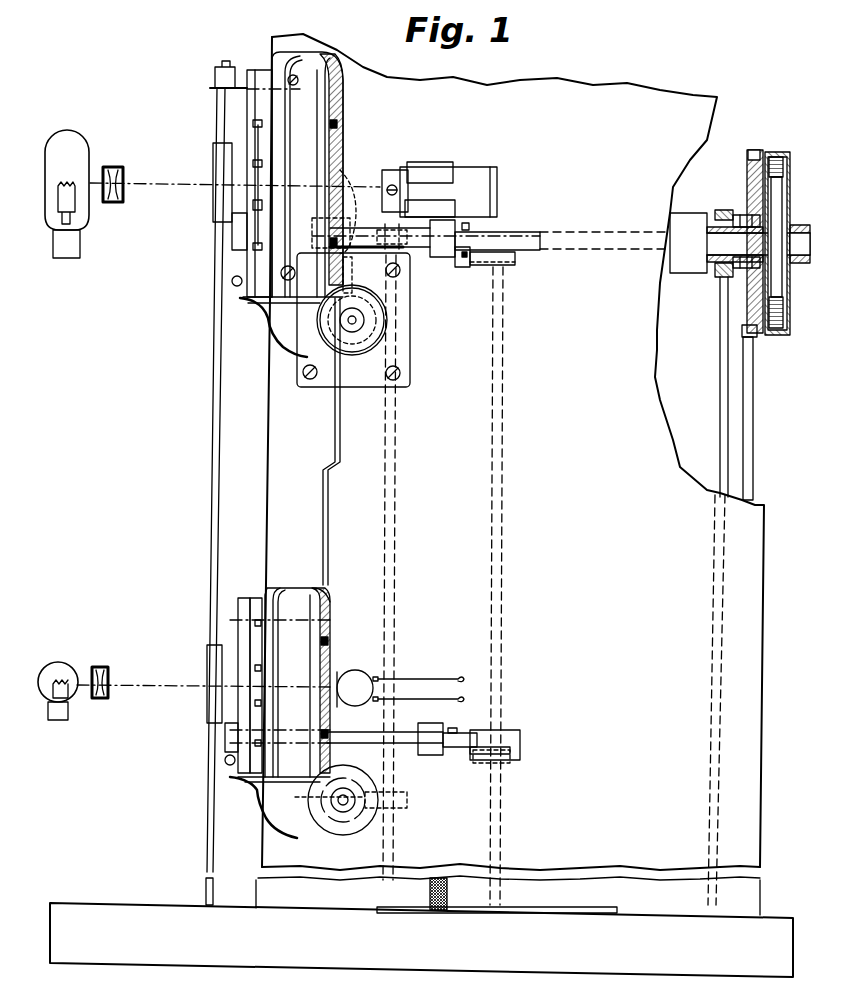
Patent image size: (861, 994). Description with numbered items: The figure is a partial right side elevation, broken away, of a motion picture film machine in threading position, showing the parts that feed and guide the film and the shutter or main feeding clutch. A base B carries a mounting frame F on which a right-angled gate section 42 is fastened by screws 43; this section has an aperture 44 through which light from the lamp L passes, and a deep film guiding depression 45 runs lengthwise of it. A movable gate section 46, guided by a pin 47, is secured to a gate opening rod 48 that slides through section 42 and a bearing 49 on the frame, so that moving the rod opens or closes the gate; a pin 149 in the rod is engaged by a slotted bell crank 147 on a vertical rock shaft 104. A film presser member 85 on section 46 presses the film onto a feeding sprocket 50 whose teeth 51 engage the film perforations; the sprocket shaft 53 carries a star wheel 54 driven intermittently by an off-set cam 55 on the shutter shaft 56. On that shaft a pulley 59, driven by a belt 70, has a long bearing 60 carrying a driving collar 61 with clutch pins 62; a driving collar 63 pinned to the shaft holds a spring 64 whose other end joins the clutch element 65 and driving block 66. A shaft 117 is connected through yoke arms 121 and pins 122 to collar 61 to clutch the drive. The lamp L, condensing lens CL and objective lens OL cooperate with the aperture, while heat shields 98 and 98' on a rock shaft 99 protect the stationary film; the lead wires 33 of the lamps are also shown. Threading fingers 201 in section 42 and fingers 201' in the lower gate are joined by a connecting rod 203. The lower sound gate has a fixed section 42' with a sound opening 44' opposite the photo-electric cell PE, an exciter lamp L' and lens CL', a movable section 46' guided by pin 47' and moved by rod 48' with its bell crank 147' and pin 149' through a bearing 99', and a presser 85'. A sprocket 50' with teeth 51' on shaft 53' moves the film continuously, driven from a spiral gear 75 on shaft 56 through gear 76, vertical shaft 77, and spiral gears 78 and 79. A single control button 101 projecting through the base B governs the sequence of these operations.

The mounting frame F is at (510, 474).
The base B is at (421, 940).
The control button 101 is at (447, 890).
The heat shield 98 is at (204, 171).
The vertical rock shaft 99 is at (240, 483).
The heat shield 98' is at (192, 695).
The lamp L is at (78, 194).
The exciter lamp L' is at (70, 697).
The lamp lead wires 33 is at (60, 501).
The condensing lens CL is at (121, 170).
The lens CL' is at (115, 670).
The pin 47 is at (287, 177).
The screws 43 is at (294, 78).
The gate section 42 is at (351, 169).
The film guiding depression 45 is at (343, 94).
The film positioning fingers 201 is at (353, 183).
The movable gate section 46 is at (227, 183).
The film presser member 85 is at (268, 340).
The aperture 44 is at (372, 211).
The off-set cam 55 is at (352, 205).
The gate opening rod 48 is at (426, 256).
The spiral gear 75 is at (390, 220).
The gear 76 is at (435, 226).
The shutter shaft 56 is at (500, 238).
The bearing 49 is at (445, 258).
The slotted bell crank 147 is at (508, 269).
The pin 149 is at (509, 284).
The objective lens OL is at (478, 170).
The feeding sprocket 50 is at (353, 339).
The star wheel 54 is at (387, 318).
The teeth 51 is at (393, 336).
The shaft 53 is at (398, 353).
The connecting rod 203 is at (329, 497).
The vertical shaft 77 is at (398, 530).
The vertical rock shaft 104 is at (505, 452).
The long bearing 60 is at (707, 258).
The driving collar 61 is at (718, 270).
The clutch pins 62 is at (742, 222).
The arms 121 is at (727, 212).
The pins 122 is at (712, 217).
The pulley 59 is at (755, 150).
The spring 64 is at (790, 160).
The driving block 66 is at (777, 222).
The clutch element 65 is at (788, 318).
The driving collar 63 is at (790, 267).
The shaft 117 is at (723, 418).
The belt 70 is at (755, 413).
The pin 47' is at (284, 670).
The fixed gate section 42' is at (341, 674).
The fingers 201' is at (347, 677).
The movable gate section 46' is at (212, 699).
The photo-electric cell PE is at (365, 659).
The sound opening 44' is at (353, 717).
The gate opening rod 48' is at (402, 753).
The block 99' is at (448, 728).
The bell crank 147' is at (513, 755).
The lower arm 149' is at (501, 775).
The sprocket 50' is at (363, 811).
The teeth 51' is at (382, 804).
The shaft 53' is at (348, 828).
The spiral gear 79 is at (305, 797).
The spiral gear 78 is at (407, 797).
The lower spring 85' is at (269, 822).